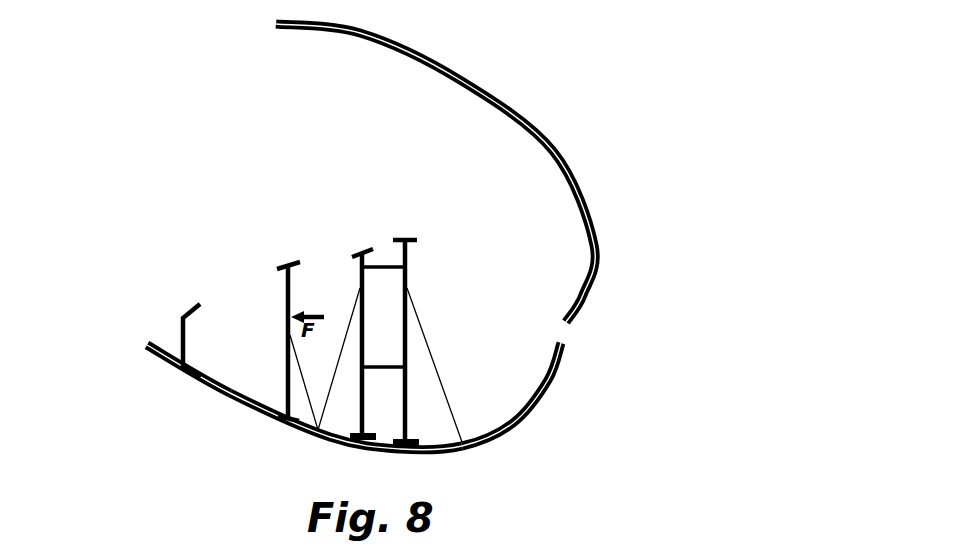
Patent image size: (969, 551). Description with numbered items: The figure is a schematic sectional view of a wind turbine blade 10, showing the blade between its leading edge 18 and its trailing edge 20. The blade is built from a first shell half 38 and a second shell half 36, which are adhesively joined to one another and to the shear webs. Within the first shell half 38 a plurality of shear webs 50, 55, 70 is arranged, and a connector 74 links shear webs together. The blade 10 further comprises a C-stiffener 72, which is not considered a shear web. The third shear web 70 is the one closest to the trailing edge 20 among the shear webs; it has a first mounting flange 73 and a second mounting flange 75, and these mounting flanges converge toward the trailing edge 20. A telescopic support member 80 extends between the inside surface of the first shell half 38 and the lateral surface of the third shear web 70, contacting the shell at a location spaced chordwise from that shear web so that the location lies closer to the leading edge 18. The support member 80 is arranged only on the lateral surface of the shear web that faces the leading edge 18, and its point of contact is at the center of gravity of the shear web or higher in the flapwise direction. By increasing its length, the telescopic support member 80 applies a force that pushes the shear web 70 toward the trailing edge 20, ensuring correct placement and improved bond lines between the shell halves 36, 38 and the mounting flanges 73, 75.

The blade 10 is at (138, 102).
The leading edge 18 is at (566, 343).
The trailing edge 20 is at (145, 345).
The second shell half 36 is at (556, 148).
The first shell half 38 is at (236, 418).
The shear web 50 is at (408, 250).
The shear web 55 is at (375, 303).
The third shear web 70 is at (240, 323).
The C-stiffener 72 is at (180, 322).
The first mounting flange of third shear web 73 is at (285, 265).
The connector between shear webs 74 is at (380, 267).
The second mounting flange of third shear web 75 is at (285, 415).
The telescopic support member 80 is at (347, 328).